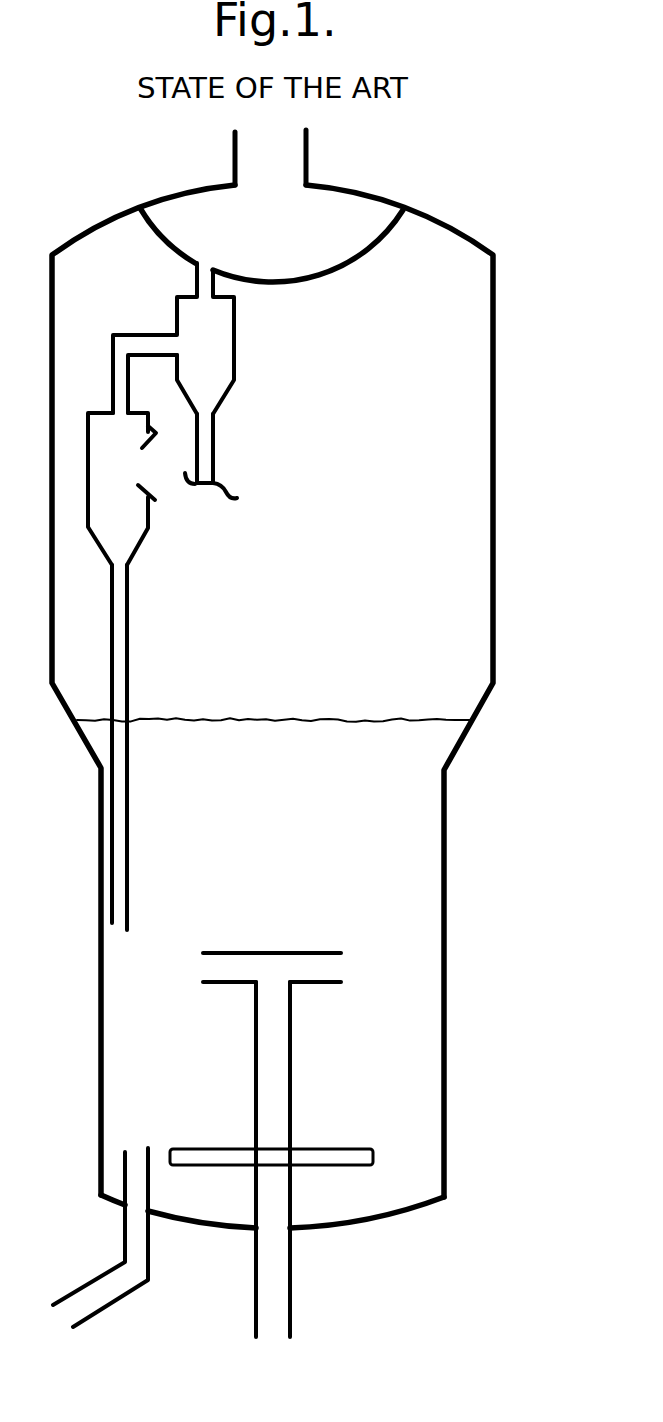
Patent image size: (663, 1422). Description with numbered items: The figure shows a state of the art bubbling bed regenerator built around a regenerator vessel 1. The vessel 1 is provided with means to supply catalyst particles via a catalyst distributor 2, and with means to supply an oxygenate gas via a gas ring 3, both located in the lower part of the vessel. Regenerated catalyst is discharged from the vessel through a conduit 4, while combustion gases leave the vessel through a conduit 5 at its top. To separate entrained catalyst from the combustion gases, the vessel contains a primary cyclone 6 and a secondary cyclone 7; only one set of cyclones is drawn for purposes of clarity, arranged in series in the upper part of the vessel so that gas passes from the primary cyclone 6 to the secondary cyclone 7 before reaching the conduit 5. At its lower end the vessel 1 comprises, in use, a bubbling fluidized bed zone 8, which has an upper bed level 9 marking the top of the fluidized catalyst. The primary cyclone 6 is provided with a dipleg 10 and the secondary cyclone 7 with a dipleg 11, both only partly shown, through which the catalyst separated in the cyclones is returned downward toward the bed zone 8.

The bubbling bed regenerator vessel 1 is at (445, 947).
The catalyst distributor 2 is at (293, 1298).
The gas ring 3 is at (350, 1148).
The conduit 4 is at (153, 1270).
The conduit 5 is at (307, 146).
The primary cyclone 6 is at (150, 522).
The secondary cyclone 7 is at (237, 357).
The bubbling fluidized bed zone 8 is at (328, 823).
The upper bed level 9 is at (408, 718).
The dipleg 10 is at (130, 650).
The dipleg 11 is at (217, 458).